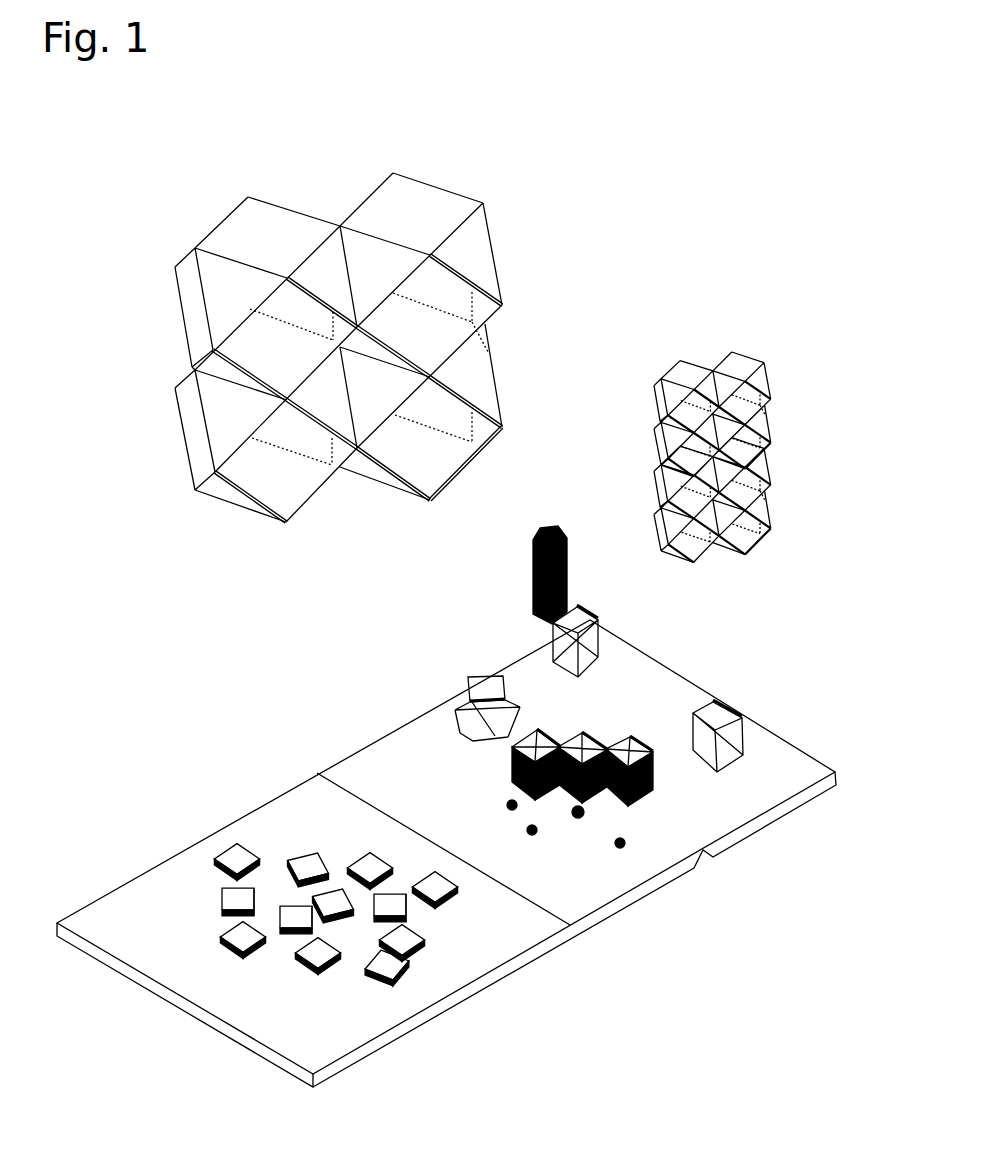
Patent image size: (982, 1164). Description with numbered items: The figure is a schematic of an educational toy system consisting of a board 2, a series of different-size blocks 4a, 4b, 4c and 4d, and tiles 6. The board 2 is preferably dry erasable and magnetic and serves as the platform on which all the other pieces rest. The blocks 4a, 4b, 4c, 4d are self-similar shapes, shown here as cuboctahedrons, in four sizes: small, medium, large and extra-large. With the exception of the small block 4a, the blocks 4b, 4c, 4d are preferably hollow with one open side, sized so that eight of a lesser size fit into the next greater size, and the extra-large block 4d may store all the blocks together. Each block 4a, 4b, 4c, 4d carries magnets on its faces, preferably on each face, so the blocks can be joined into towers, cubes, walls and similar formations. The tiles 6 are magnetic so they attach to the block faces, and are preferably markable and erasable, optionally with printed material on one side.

The board 2 is at (508, 947).
The tiles 6 is at (387, 963).
The small block 4a is at (622, 848).
The medium block 4b is at (718, 704).
The large block 4c is at (712, 388).
The extra-large block 4d is at (395, 192).